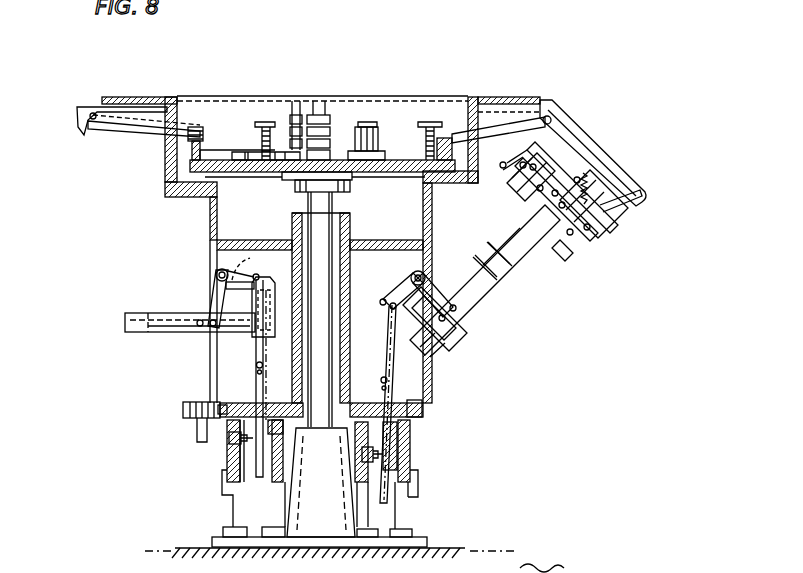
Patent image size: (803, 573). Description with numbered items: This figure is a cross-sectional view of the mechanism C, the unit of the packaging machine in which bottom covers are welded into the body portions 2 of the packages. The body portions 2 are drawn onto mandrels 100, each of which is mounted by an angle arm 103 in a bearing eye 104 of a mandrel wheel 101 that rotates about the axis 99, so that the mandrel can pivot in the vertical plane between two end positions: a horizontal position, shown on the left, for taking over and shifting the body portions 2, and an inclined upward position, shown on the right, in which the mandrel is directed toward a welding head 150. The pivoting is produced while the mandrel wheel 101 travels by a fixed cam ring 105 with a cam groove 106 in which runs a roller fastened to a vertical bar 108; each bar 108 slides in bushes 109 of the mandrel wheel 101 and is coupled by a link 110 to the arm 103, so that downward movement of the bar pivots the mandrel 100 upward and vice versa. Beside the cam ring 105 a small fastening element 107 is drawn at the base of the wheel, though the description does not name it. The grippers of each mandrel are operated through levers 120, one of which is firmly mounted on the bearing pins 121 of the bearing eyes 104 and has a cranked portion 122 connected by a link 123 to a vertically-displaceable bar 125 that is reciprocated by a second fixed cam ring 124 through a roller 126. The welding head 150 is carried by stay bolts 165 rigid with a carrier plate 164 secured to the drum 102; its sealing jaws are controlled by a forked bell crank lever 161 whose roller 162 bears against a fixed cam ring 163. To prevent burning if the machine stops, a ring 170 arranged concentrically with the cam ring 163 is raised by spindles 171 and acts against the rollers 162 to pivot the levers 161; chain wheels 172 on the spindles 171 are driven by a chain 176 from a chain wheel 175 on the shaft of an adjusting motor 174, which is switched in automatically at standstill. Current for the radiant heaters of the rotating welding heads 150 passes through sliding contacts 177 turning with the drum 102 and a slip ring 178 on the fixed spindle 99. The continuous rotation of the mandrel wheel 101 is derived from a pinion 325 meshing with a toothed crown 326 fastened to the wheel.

The body portion 2 is at (520, 233).
The axis 99 is at (318, 309).
The mandrel 100 is at (143, 333).
The mandrel wheel 101 is at (215, 245).
The drum 102 is at (190, 183).
The angle arm 103 is at (272, 312).
The bearing eye 104 is at (215, 260).
The fixed cam ring 105 is at (227, 463).
The cam groove 106 is at (412, 463).
The bolt 107 is at (228, 441).
The vertical bar 108 is at (256, 403).
The bush 109 is at (263, 478).
The link 110 is at (255, 338).
The lever 120 is at (215, 298).
The bearing pin 121 is at (216, 277).
The cranked portion 122 is at (244, 275).
The link 123 is at (266, 318).
The fixed cam ring 124 is at (272, 420).
The vertically-displaceable bar 125 is at (383, 502).
The roller 126 is at (376, 456).
The welding head 150 is at (566, 291).
The forked bell crank lever 161 is at (157, 128).
The roller 162 is at (197, 126).
The fixed cam ring 163 is at (238, 151).
The carrier plate 164 is at (78, 118).
The stay bolt 165 is at (557, 163).
The ring 170 is at (201, 153).
The spindle 171 is at (279, 132).
The chain wheel 172 is at (273, 122).
The adjusting motor 174 is at (378, 139).
The chain wheel 175 is at (364, 125).
The chain 176 is at (399, 125).
The sliding contact 177 is at (304, 133).
The slip ring 178 is at (334, 141).
The pinion 325 is at (188, 410).
The toothed crown 326 is at (222, 402).
The mechanism C is at (146, 466).